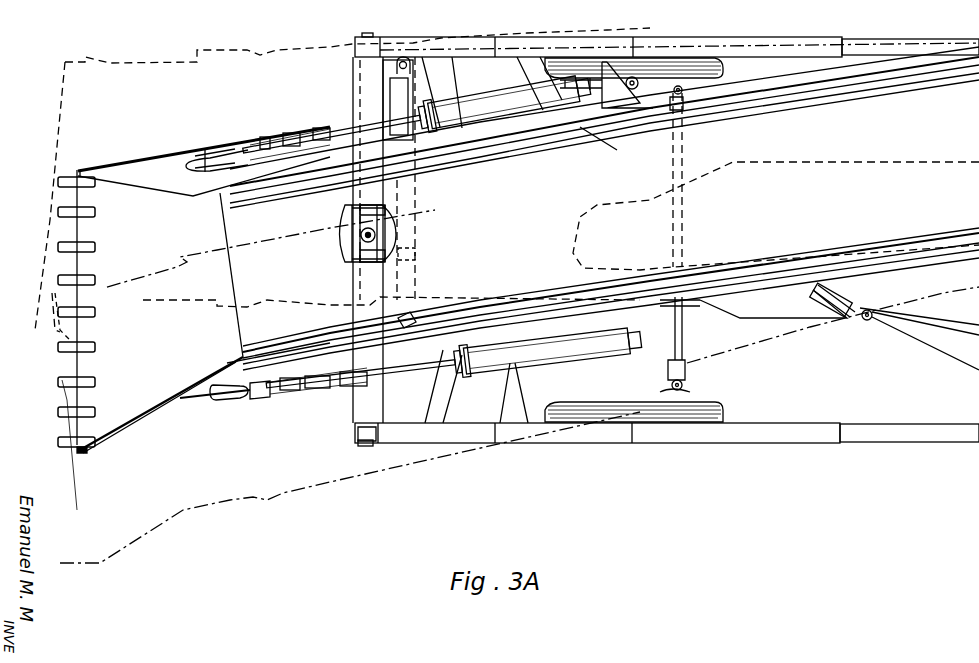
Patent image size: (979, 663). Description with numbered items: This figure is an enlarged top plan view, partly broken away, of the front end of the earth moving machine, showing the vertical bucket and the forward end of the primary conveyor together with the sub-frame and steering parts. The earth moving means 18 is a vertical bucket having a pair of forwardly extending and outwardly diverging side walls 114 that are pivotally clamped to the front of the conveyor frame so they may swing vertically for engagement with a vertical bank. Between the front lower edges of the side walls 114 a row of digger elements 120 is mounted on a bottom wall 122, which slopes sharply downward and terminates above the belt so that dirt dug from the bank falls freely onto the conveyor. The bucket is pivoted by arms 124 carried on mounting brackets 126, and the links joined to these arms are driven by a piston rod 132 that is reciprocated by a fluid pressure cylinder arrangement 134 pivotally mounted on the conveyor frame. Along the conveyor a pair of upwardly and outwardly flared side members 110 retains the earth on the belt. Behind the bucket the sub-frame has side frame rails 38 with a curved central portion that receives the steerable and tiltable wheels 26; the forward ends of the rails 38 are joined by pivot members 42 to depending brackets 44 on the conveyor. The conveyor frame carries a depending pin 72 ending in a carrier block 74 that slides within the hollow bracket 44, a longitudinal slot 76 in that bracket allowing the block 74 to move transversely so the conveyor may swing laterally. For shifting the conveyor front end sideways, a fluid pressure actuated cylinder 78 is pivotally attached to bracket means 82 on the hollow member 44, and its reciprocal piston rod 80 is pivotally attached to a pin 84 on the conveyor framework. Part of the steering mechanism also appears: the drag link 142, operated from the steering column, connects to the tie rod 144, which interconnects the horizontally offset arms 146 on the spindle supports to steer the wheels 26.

The means for moving earth onto the front end of the primary conveyor 18 is at (121, 168).
The steerable and tiltable wheels 26 is at (697, 60).
The side frame rails 38 is at (475, 437).
The pivot members 42 is at (367, 448).
The depending brackets 44 is at (360, 398).
The depending pin 72 is at (360, 238).
The carrier block 74 is at (355, 250).
The longitudinal slot 76 is at (375, 200).
The fluid pressure actuated cylinder 78 is at (400, 97).
The piston rod 80 is at (408, 288).
The bracket means 82 is at (391, 62).
The pin 84 is at (410, 327).
The side members 110 is at (912, 80).
The side walls 114 is at (181, 393).
The digger elements 120 is at (67, 347).
The bottom wall 122 is at (70, 328).
The arms 124 is at (287, 387).
The mounting brackets 126 is at (215, 397).
The piston rod 132 is at (350, 125).
The fluid pressure cylinder arrangement 134 is at (477, 100).
The drag link 142 is at (660, 163).
The tie rod 144 is at (683, 338).
The horizontally offset arms 146 is at (683, 392).